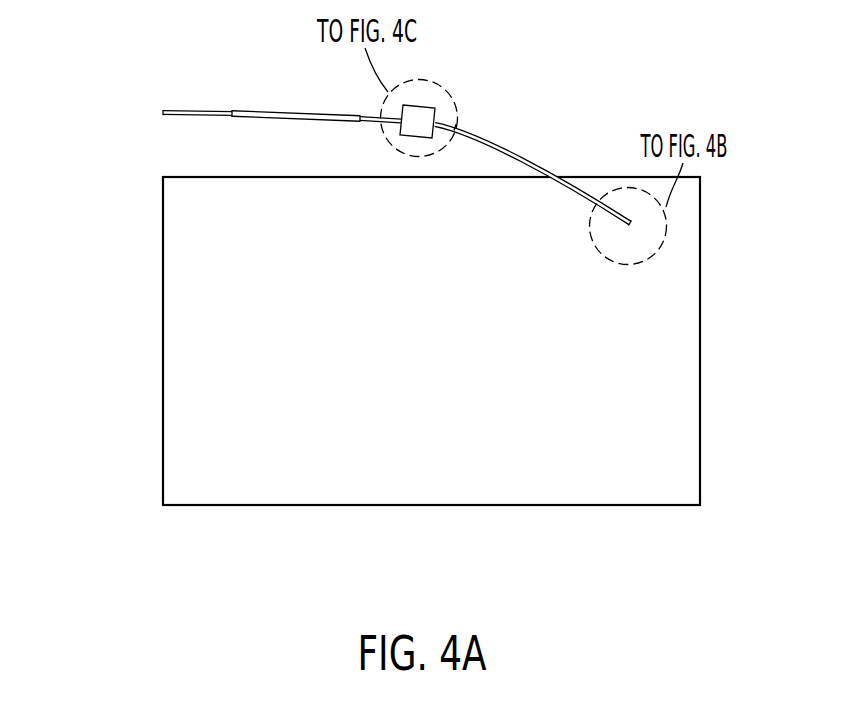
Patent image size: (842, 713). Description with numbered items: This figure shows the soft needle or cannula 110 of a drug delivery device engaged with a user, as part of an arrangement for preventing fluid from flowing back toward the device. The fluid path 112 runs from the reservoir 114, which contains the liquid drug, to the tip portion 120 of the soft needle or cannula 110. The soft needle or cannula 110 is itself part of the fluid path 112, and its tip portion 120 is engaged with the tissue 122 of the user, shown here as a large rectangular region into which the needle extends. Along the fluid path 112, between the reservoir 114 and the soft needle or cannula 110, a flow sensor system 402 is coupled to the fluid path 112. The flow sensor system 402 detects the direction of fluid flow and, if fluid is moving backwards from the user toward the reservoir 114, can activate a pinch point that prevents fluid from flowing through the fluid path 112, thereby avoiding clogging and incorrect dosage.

The soft needle or cannula 110 is at (593, 203).
The fluid path 112 is at (198, 110).
The reservoir 114 is at (102, 115).
The tip portion 120 is at (632, 227).
The tissue 122 is at (702, 323).
The flow sensor system 402 is at (427, 107).